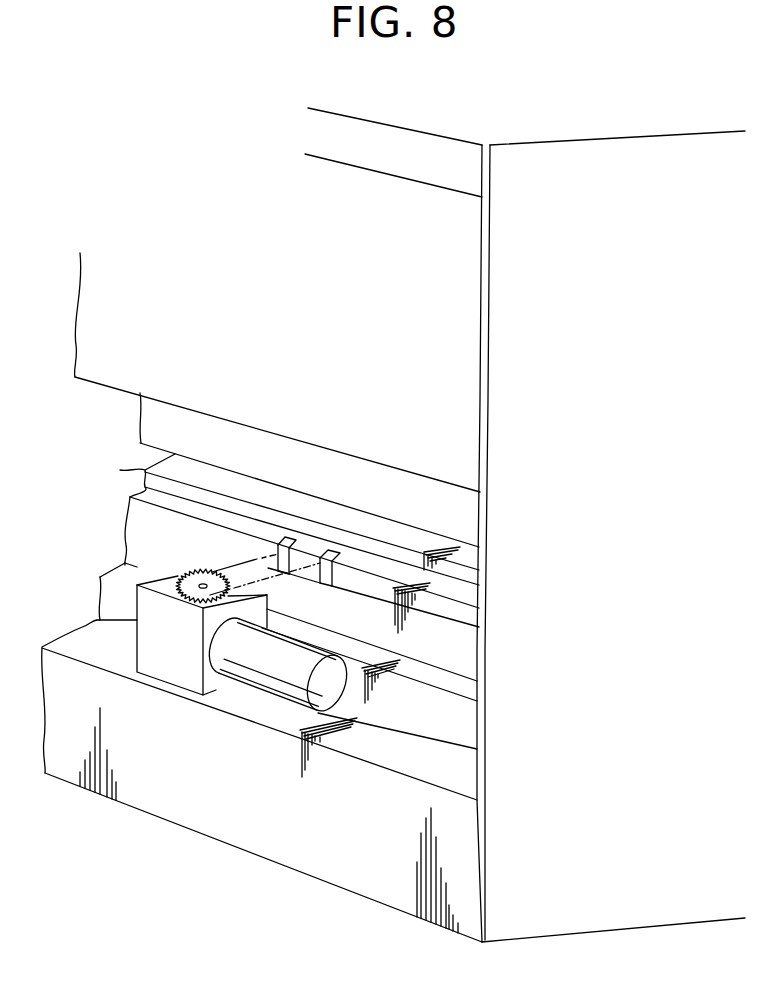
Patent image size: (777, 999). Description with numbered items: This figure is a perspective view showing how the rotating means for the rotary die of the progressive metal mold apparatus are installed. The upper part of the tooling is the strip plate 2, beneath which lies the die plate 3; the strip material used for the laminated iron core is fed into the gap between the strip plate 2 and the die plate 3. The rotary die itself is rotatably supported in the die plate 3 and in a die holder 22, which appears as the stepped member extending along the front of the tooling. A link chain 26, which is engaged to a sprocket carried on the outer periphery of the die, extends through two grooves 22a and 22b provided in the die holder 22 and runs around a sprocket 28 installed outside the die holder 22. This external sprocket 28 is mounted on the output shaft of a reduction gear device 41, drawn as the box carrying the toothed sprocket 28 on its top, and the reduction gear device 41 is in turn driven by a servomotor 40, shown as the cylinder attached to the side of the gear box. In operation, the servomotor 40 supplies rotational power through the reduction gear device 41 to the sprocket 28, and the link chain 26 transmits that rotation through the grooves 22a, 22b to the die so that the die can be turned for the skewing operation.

The strip plate 2 is at (147, 422).
The die plate 3 is at (145, 474).
The die holder 22 is at (125, 540).
The groove 22a is at (335, 575).
The groove 22b is at (268, 560).
The link chain 26 is at (315, 578).
The sprocket 28 is at (182, 568).
The servomotor 40 is at (273, 678).
The reduction gear device 41 is at (163, 672).